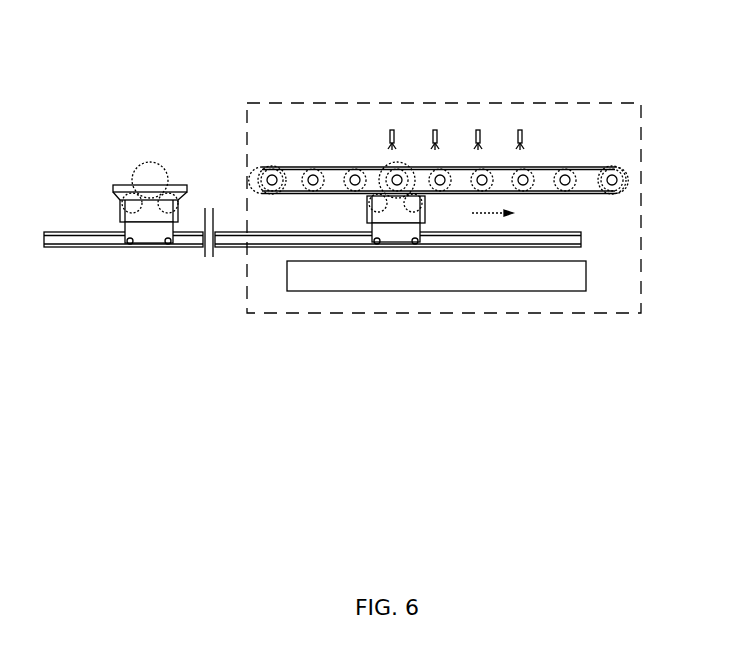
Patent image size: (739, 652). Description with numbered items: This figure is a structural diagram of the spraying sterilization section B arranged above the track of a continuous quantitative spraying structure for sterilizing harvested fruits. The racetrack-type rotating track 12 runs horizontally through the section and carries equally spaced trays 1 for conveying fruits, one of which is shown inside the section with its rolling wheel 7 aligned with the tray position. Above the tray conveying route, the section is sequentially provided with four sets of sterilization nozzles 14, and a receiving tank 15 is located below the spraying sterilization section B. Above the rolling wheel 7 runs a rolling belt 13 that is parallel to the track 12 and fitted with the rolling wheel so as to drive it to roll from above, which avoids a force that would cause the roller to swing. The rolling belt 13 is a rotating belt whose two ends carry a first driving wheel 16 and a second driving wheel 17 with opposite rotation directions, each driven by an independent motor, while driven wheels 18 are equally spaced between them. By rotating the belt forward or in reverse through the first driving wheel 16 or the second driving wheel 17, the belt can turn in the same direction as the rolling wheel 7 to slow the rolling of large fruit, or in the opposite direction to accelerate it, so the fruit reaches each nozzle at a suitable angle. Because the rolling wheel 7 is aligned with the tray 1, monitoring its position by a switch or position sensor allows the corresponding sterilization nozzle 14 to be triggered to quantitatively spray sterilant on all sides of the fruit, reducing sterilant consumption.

The tray 1 is at (365, 215).
The rolling wheel 7 is at (412, 223).
The rotating track 12 is at (567, 233).
The rolling belt 13 is at (587, 193).
The sterilization nozzles 14 is at (512, 123).
The receiving tank 15 is at (537, 270).
The first driving wheel 16 is at (272, 168).
The second driving wheel 17 is at (614, 168).
The driven wheels 18 is at (352, 173).
The spraying sterilization section B is at (444, 229).